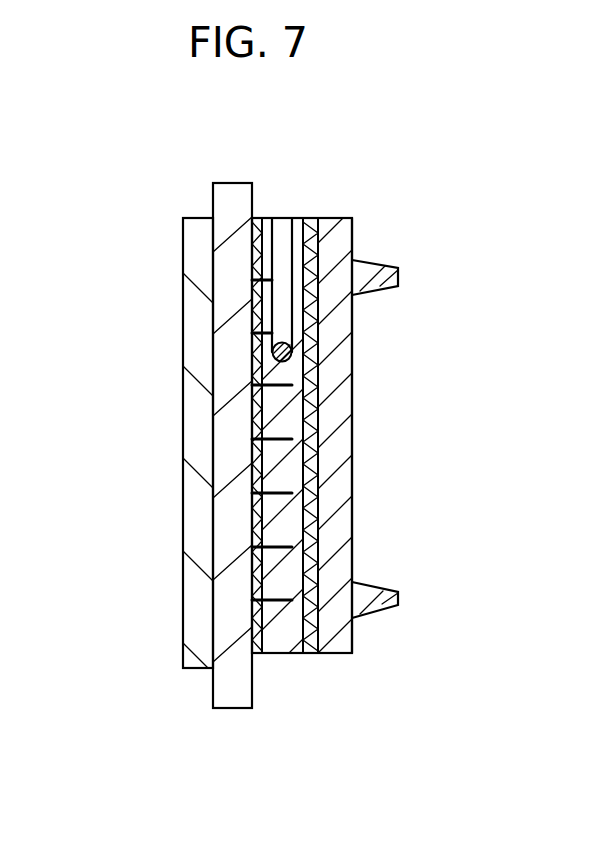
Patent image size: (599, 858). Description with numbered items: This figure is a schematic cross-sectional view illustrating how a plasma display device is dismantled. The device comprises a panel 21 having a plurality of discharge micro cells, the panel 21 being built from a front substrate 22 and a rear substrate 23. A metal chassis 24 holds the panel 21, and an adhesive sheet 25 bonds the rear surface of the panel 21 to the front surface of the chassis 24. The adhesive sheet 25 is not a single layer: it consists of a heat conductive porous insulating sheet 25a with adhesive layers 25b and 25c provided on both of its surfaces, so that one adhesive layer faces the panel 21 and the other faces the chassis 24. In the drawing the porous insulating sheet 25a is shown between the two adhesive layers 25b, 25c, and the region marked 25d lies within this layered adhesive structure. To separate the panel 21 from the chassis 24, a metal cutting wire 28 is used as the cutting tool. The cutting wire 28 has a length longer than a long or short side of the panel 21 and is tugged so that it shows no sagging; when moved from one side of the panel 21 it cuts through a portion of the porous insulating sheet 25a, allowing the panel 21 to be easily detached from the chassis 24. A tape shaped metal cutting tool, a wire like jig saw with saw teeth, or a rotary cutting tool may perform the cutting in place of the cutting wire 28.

The panel 21 is at (190, 418).
The front substrate 22 is at (190, 262).
The rear substrate 23 is at (242, 192).
The metal chassis 24 is at (332, 252).
The adhesive sheet 25 is at (261, 491).
The heat conductive porous insulating sheet 25a is at (276, 586).
The adhesive layer 25b is at (252, 397).
The adhesive layer 25c is at (322, 653).
The holding member ribs/channel 25d is at (257, 482).
The metal cutting wire 28 is at (291, 349).